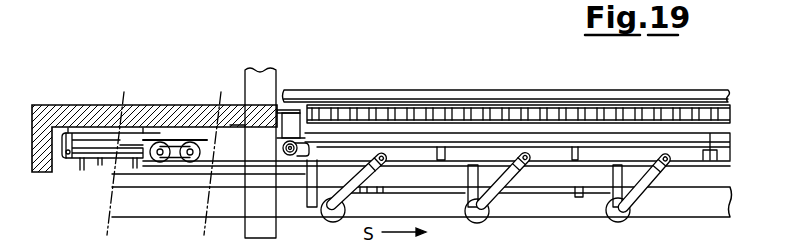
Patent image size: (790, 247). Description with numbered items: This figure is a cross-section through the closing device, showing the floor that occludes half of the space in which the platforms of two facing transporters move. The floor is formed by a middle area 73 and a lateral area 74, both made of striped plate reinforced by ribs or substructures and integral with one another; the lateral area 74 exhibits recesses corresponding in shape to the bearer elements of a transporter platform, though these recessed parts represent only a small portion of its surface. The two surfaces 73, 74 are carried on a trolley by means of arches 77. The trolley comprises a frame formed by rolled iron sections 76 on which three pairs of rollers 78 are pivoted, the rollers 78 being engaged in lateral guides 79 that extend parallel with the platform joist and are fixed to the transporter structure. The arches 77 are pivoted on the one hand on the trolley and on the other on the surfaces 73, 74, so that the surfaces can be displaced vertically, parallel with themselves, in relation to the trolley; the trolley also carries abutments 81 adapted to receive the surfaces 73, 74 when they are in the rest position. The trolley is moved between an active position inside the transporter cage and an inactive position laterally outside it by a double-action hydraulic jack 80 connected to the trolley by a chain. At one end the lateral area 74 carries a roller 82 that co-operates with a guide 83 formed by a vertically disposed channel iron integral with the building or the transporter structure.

The middle area 73 is at (560, 133).
The lateral area 74 is at (518, 90).
The rolled iron sections 76 is at (552, 203).
The arches 77 is at (373, 176).
The rollers 78 is at (333, 218).
The lateral guides 79 is at (293, 210).
The double-action hydraulic jack 80 is at (81, 160).
The abutments 81 is at (468, 177).
The roller 82 is at (281, 148).
The guide 83 is at (289, 122).